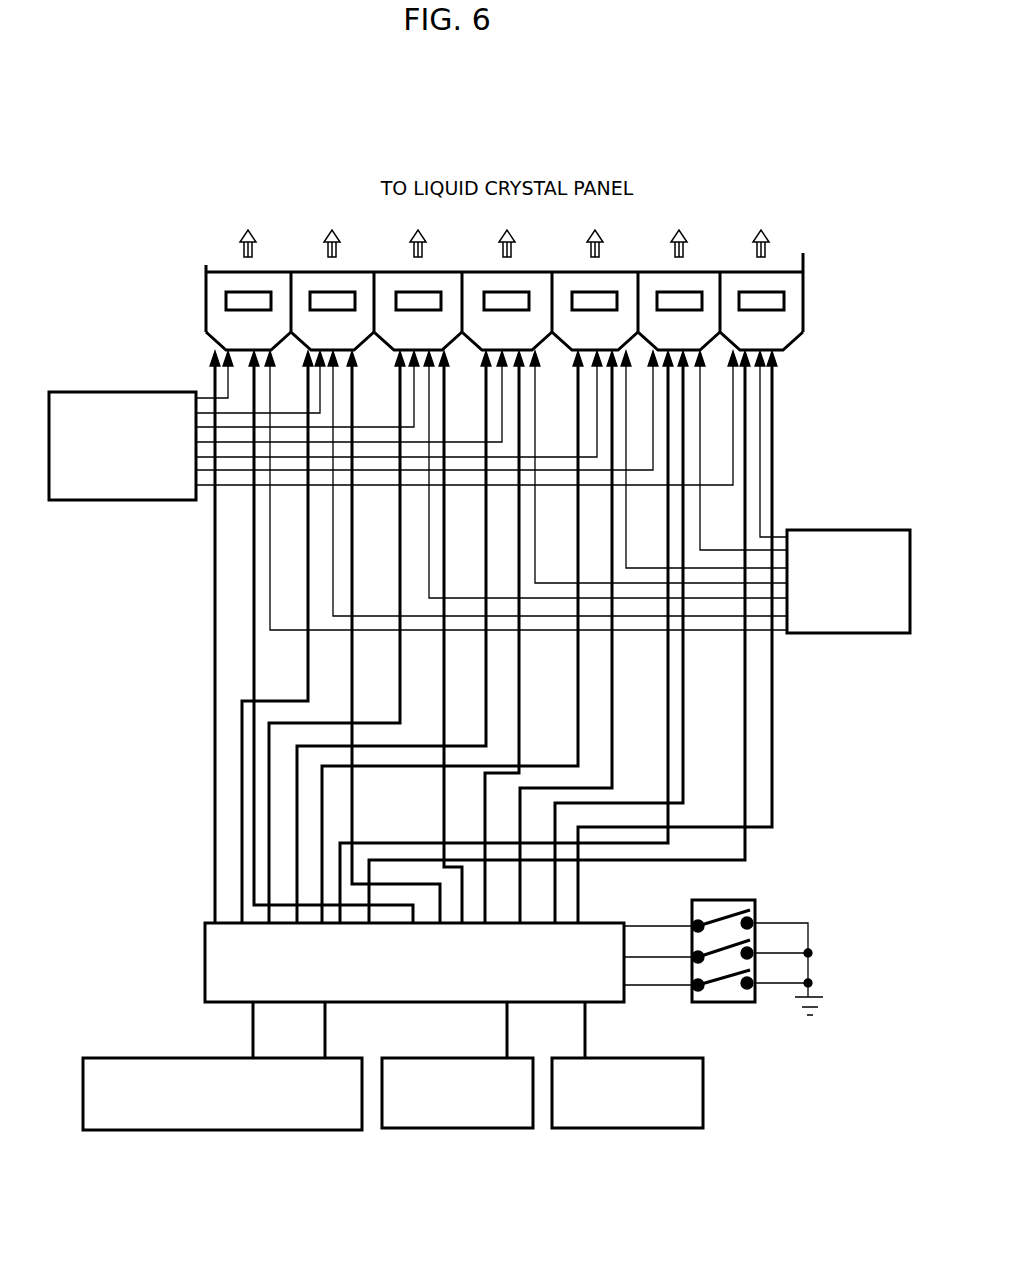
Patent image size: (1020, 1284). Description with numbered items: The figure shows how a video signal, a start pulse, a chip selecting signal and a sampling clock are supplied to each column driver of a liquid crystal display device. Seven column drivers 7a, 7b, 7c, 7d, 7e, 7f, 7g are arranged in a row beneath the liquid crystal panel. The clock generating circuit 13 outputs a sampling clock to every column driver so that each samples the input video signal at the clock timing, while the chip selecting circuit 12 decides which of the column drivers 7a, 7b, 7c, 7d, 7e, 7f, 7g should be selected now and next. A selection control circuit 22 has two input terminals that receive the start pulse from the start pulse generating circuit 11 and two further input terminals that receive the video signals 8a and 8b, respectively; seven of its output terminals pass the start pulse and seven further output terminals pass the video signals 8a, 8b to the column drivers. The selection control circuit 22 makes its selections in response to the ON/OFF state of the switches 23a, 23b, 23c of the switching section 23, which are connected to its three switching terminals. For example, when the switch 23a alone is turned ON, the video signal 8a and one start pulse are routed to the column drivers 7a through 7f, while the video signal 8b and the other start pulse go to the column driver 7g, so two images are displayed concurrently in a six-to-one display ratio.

The column driver 7a is at (232, 280).
The column driver 7b is at (312, 280).
The column driver 7c is at (398, 280).
The column driver 7d is at (485, 280).
The column driver 7e is at (572, 280).
The column driver 7f is at (662, 280).
The column driver 7g is at (742, 280).
The clock generating circuit 13 is at (134, 500).
The chip selecting circuit 12 is at (828, 633).
The selection control circuit 22 is at (600, 922).
The switching section 23 is at (776, 953).
The switch 23a is at (755, 902).
The switch 23b is at (760, 940).
The switch 23c is at (730, 984).
The start pulse generating circuit 11 is at (318, 1130).
The video signal 8a is at (473, 1128).
The video signal 8b is at (635, 1128).